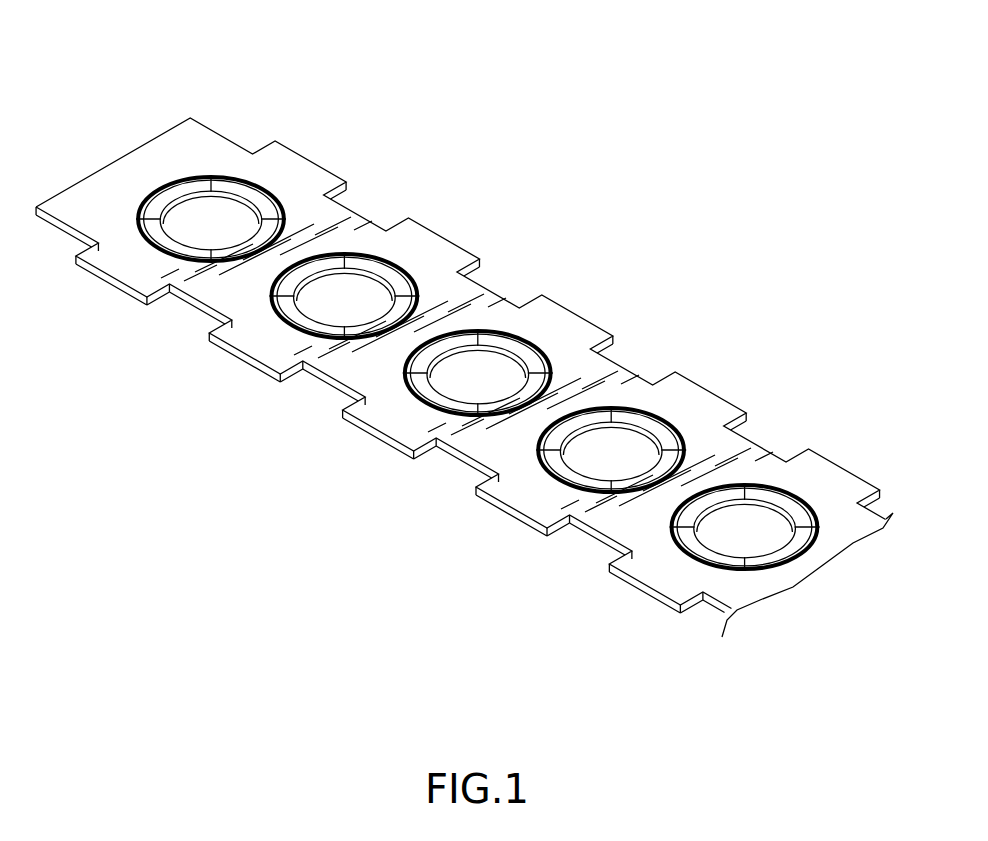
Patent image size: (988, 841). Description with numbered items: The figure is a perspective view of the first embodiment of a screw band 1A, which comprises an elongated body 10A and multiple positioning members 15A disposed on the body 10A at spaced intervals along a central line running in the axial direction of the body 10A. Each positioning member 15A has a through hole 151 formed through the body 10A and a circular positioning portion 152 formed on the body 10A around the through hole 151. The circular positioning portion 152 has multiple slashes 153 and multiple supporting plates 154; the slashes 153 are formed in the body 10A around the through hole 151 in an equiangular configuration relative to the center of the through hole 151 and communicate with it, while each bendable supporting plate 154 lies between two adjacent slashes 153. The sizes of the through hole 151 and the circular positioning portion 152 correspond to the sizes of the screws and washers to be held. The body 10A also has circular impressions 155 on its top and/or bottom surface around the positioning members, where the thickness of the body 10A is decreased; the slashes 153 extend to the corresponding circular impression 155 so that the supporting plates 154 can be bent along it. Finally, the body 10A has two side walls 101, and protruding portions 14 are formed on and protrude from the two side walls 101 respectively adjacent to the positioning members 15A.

The screw band 1A is at (461, 321).
The body 10A is at (461, 350).
The protruding portion 14 is at (520, 500).
The side wall 101 is at (452, 465).
The positioning member 15A is at (478, 334).
The through hole 151 is at (360, 277).
The circular positioning portion 152 is at (350, 340).
The slash 153 is at (395, 295).
The supporting plate 154 is at (398, 277).
The circular impression 155 is at (273, 309).